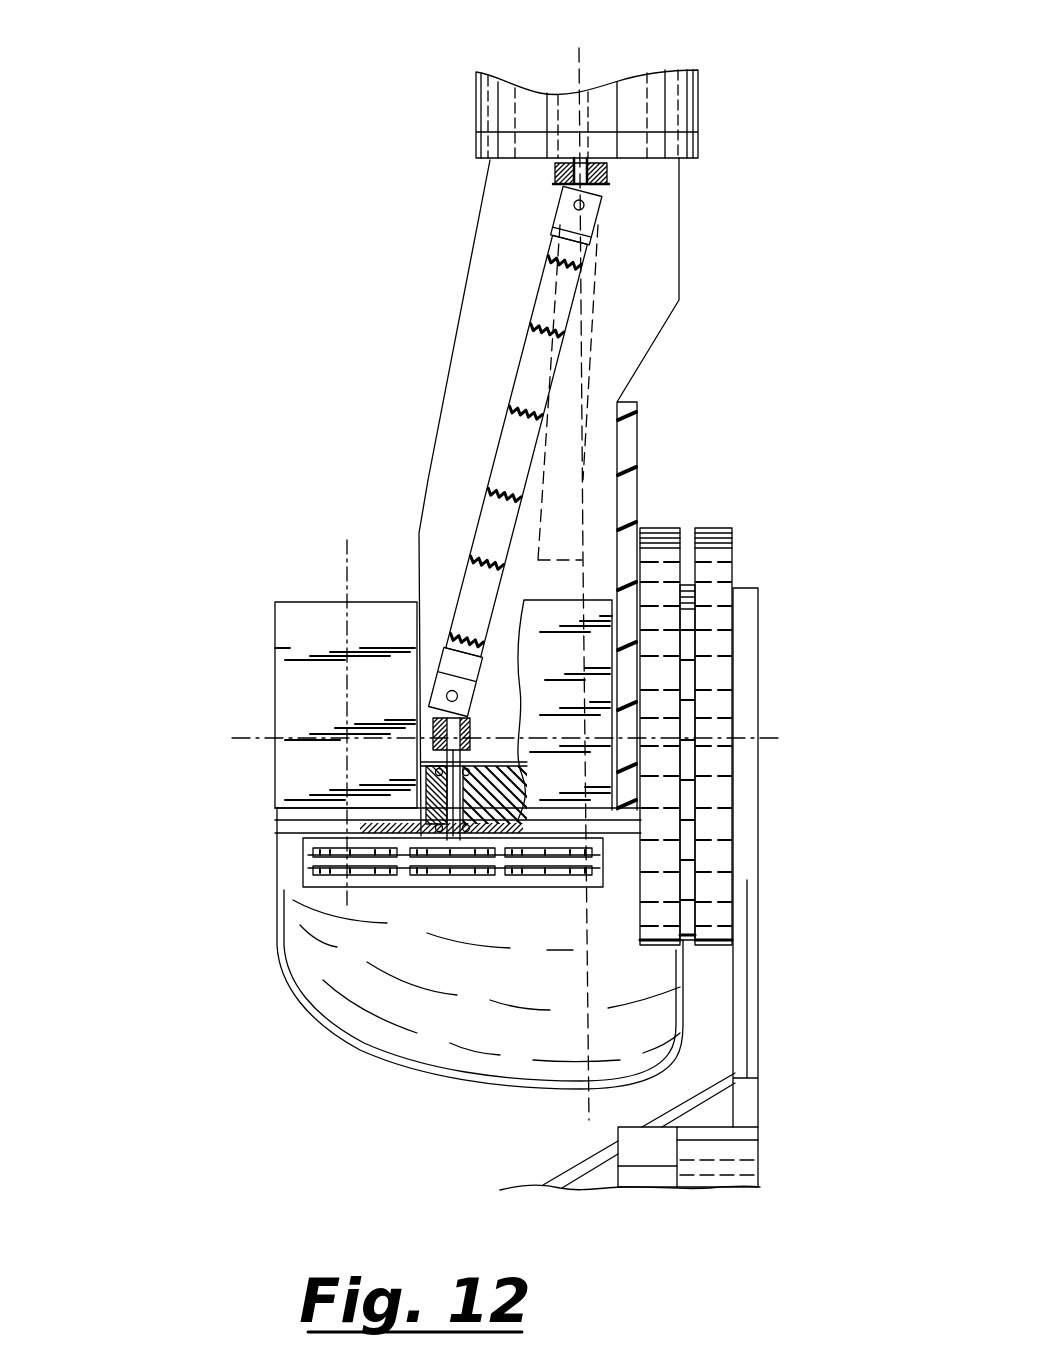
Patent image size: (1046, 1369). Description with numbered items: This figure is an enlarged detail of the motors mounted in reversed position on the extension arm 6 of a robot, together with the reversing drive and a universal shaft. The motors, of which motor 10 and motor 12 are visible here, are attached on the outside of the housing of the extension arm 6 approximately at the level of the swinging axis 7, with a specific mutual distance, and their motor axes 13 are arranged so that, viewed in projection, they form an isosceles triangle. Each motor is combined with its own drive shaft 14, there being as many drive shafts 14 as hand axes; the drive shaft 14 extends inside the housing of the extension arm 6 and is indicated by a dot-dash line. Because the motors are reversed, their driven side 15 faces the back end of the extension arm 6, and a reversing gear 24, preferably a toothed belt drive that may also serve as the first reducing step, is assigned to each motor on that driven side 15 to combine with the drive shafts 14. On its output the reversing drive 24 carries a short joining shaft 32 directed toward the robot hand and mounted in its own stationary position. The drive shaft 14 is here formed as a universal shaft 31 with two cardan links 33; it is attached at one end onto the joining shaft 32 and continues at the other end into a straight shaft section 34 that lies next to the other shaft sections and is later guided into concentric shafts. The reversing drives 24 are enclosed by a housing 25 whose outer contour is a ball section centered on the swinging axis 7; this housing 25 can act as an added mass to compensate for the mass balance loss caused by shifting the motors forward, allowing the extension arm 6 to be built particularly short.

The extension arm 6 is at (477, 383).
The swinging axis 7 is at (238, 740).
The motor 10 is at (597, 630).
The motor 12 is at (305, 627).
The motor axis 13 is at (343, 578).
The drive shaft 14 is at (578, 50).
The driven side 15 is at (259, 851).
The reversing gear 24 is at (338, 873).
The housing 25 is at (372, 993).
The universal shaft 31 is at (553, 302).
The joining shaft 32 is at (425, 765).
The cardan link 33 is at (605, 207).
The shaft section 34 is at (555, 170).